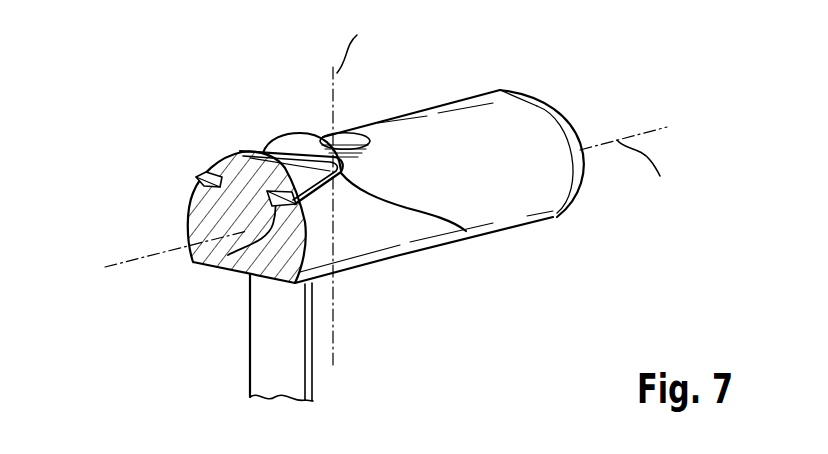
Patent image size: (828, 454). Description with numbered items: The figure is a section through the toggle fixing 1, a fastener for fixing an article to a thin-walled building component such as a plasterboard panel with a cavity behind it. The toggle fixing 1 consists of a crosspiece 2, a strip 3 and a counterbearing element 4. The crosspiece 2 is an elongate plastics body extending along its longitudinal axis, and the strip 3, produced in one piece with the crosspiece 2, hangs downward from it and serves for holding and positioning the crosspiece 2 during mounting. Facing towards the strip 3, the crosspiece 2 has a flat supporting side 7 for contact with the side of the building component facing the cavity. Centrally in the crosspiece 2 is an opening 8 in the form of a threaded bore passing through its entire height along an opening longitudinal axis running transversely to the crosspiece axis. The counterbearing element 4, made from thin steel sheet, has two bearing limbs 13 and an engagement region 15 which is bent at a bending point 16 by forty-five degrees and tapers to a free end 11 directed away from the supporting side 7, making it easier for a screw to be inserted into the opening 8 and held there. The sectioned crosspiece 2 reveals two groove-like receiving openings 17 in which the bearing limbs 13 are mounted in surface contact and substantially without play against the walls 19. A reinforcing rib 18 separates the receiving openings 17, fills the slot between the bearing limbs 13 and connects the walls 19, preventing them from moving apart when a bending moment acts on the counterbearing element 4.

The toggle fixing 1 is at (123, 121).
The crosspiece 2 is at (523, 127).
The strip 3 is at (262, 349).
The counterbearing element 4 is at (272, 148).
The flat supporting side 7 is at (391, 263).
The opening 8 is at (347, 133).
The free end 11 is at (301, 148).
The bearing limbs 13 is at (313, 194).
The engagement region 15 is at (288, 143).
The bending point 16 is at (466, 231).
The receiving openings 17 is at (228, 255).
The reinforcing rib 18 is at (243, 187).
The walls 19 is at (205, 170).